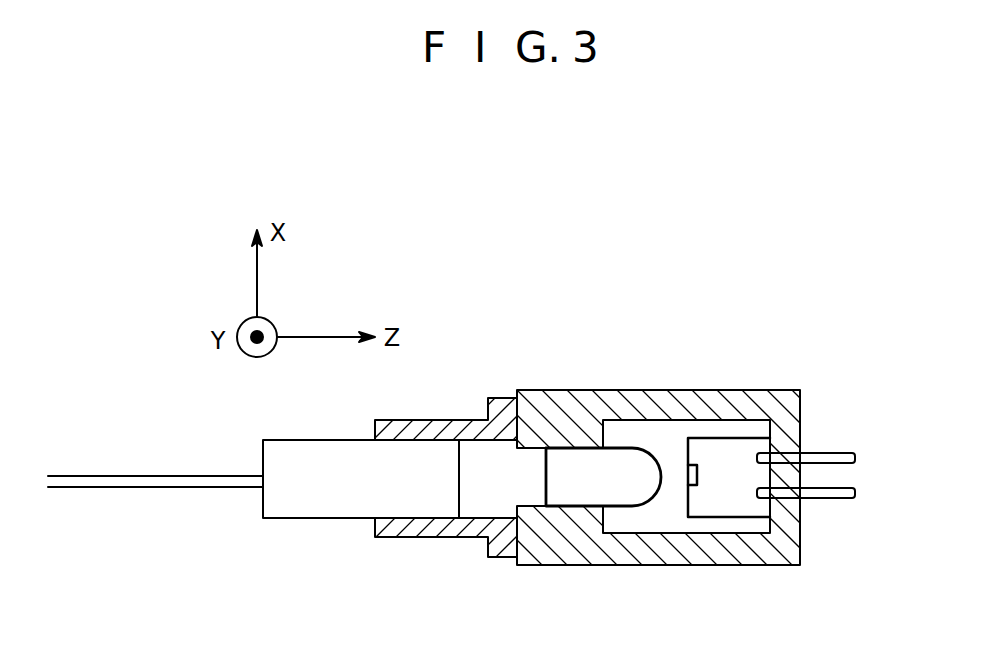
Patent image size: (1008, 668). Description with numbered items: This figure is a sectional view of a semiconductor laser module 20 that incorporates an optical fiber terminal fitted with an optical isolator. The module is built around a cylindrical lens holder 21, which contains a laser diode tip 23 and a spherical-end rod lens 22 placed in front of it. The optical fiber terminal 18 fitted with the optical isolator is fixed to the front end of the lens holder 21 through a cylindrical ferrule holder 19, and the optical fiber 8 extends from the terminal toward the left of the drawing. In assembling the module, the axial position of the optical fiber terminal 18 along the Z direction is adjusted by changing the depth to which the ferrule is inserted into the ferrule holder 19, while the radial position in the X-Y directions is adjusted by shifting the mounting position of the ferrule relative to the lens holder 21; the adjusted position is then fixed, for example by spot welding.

The optical fiber 8 is at (107, 475).
The optical fiber terminal 18 is at (283, 510).
The ferrule holder 19 is at (463, 528).
The semiconductor laser module 20 is at (654, 473).
The lens holder 21 is at (563, 400).
The spherical-end rod lens 22 is at (625, 493).
The laser diode tip 23 is at (697, 488).